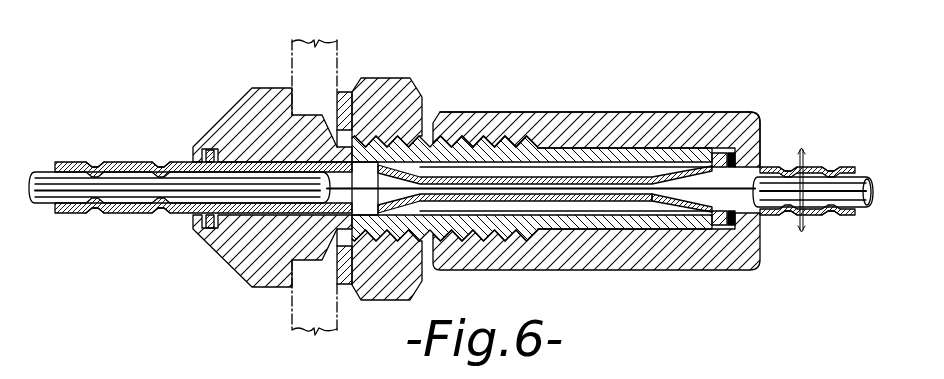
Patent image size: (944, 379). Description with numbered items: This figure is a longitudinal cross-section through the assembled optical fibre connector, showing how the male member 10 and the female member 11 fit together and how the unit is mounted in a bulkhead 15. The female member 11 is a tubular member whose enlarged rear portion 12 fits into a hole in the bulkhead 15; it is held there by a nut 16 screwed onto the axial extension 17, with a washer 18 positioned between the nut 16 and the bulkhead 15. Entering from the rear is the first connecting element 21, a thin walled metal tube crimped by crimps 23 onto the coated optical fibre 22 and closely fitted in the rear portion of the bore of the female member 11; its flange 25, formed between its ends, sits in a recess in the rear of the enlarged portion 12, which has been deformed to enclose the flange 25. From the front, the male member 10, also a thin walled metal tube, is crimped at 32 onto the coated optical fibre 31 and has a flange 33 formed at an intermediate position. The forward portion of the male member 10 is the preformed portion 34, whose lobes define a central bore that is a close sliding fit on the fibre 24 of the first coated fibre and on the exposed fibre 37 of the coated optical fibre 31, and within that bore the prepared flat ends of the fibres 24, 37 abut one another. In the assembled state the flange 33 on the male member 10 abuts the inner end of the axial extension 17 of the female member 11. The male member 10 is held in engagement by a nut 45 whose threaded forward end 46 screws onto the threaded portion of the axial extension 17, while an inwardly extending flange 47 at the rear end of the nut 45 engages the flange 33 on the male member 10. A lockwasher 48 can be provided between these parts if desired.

The male member 10 is at (697, 211).
The female member 11 is at (404, 154).
The enlarged rear portion 12 is at (238, 100).
The bulkhead 15 is at (325, 38).
The nut 16 is at (414, 80).
The axial extension 17 is at (600, 156).
The washer 18 is at (345, 92).
The first connecting element 21 is at (148, 163).
The coated optical fibre 22 is at (68, 182).
The crimps 23 is at (95, 215).
The fibre 24 is at (443, 241).
The flange 25 is at (215, 229).
The coated optical fibre 31 is at (837, 188).
The crimps 32 is at (785, 218).
The flange 33 is at (722, 151).
The preformed portion 34 is at (588, 201).
The fibre 37 is at (650, 203).
The nut 45 is at (560, 98).
The threaded forward end 46 is at (487, 137).
The inwardly extending flange 47 is at (761, 140).
The lockwasher 48 is at (732, 226).